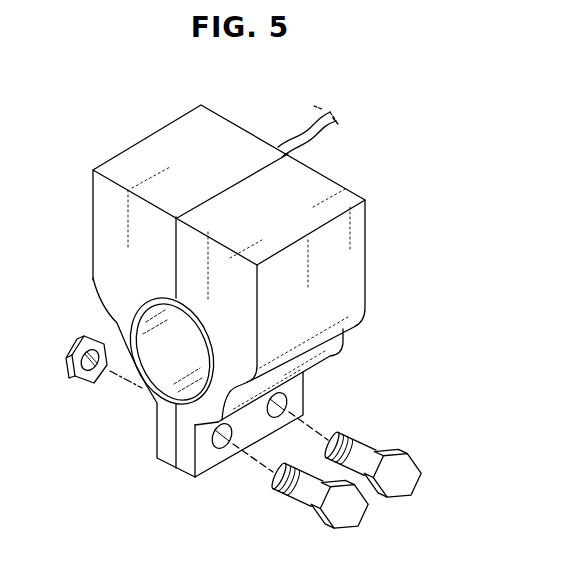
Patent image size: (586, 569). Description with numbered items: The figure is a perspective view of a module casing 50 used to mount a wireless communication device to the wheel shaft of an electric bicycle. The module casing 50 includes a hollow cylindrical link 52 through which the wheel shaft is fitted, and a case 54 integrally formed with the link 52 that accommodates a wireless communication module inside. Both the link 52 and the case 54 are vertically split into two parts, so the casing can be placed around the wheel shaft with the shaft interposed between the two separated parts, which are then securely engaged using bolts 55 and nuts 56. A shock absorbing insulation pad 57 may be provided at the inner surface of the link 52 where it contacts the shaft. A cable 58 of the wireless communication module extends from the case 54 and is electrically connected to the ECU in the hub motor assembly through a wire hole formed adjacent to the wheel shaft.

The module casing 50 is at (397, 201).
The hollow cylindrical link 52 is at (134, 368).
The case 54 is at (366, 288).
The bolts 55 is at (371, 453).
The nuts 56 is at (70, 370).
The shock absorbing insulation pad 57 is at (152, 302).
The cable 58 is at (291, 146).